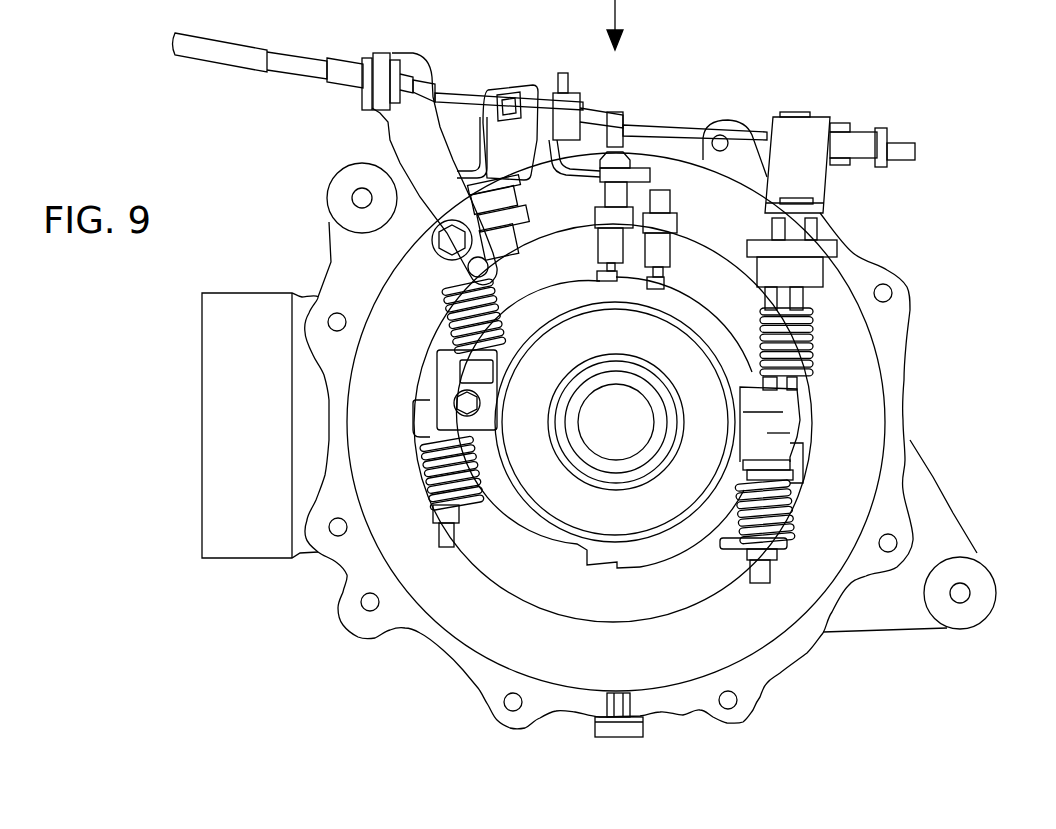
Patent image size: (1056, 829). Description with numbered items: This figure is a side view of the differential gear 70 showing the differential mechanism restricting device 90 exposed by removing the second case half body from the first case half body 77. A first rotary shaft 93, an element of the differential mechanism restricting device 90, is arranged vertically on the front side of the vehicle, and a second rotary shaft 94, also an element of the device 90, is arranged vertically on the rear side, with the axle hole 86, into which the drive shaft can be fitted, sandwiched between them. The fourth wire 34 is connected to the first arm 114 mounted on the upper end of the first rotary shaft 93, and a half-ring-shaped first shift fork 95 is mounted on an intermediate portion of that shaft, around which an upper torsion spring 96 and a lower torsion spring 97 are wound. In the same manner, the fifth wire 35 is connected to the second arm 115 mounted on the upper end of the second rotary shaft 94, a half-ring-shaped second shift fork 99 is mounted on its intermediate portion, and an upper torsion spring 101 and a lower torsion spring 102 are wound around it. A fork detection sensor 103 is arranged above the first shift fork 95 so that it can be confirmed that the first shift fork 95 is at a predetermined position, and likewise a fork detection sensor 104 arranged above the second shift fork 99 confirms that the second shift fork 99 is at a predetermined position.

The fourth wire 34 is at (470, 100).
The fifth wire 35 is at (763, 140).
The brake device 70 is at (928, 413).
The first case half body 77 is at (890, 473).
The axle hole 86 is at (582, 430).
The differential mechanism restricting device 90 is at (920, 210).
The first rotary shaft 93 is at (447, 347).
The second rotary shaft 94 is at (795, 300).
The first shift fork 95 is at (523, 540).
The upper torsion spring 96 is at (440, 300).
The lower torsion spring 97 is at (423, 467).
The second shift fork 99 is at (683, 543).
The upper torsion spring 101 is at (813, 350).
The lower torsion spring 102 is at (790, 530).
The fork detection sensor 103 is at (613, 240).
The fork detection sensor 104 is at (667, 247).
The first arm 114 is at (547, 113).
The second arm 115 is at (813, 140).